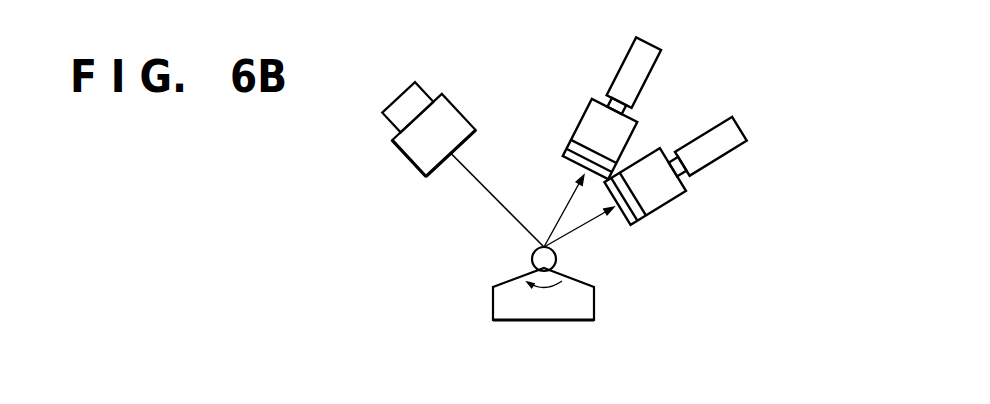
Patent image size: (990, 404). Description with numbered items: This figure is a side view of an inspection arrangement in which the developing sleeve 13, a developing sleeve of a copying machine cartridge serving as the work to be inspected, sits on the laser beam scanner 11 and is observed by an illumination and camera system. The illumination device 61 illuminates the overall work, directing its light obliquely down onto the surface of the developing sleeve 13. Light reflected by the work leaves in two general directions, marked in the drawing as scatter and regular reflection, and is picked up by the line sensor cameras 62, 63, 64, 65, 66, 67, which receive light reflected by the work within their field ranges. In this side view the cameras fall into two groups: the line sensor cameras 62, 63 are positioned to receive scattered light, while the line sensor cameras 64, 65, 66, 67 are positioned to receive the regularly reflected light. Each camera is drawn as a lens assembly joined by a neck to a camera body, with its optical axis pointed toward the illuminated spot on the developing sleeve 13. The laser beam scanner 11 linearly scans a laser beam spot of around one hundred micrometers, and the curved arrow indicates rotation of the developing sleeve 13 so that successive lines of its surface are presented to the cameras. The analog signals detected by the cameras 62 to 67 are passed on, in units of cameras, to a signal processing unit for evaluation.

The laser beam scanner 11 is at (594, 300).
The developing sleeve 13 is at (539, 251).
The illumination device 61 is at (413, 170).
The line sensor camera 62 is at (648, 139).
The line sensor camera 63 is at (660, 48).
The line sensor camera 64 is at (747, 177).
The line sensor camera 65 is at (747, 177).
The line sensor camera 66 is at (747, 177).
The line sensor camera 67 is at (737, 125).